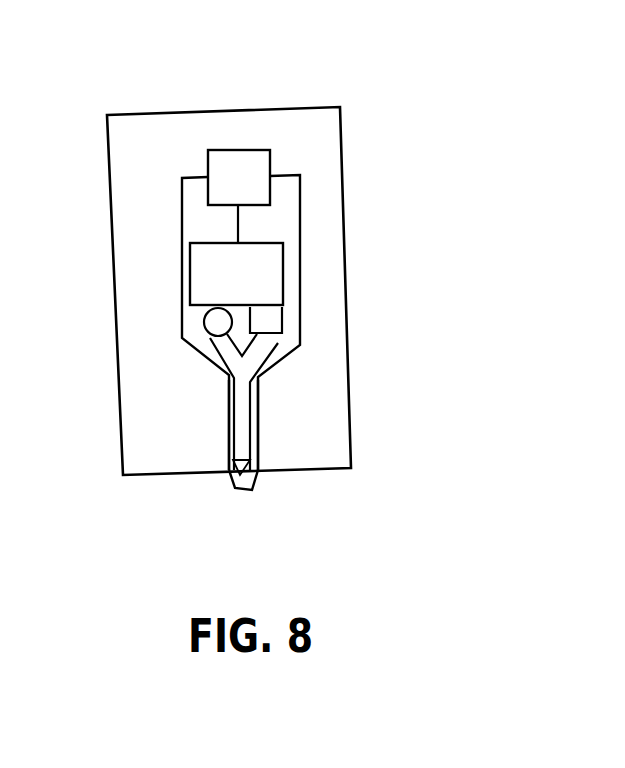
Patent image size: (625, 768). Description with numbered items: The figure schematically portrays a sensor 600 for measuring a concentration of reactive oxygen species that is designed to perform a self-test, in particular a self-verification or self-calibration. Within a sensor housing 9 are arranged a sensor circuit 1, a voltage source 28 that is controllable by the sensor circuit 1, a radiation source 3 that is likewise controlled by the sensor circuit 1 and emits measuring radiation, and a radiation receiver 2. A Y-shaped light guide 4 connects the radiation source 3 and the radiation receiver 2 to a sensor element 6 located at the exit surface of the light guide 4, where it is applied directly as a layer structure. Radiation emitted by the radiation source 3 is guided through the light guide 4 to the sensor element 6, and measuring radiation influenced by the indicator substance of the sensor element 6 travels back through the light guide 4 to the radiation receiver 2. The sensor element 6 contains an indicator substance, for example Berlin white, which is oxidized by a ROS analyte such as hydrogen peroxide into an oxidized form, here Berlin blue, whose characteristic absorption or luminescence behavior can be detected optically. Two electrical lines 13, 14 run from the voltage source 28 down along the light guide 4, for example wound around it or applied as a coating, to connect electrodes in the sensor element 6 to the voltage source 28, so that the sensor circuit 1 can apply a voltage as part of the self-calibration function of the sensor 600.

The sensor 600 is at (345, 90).
The sensor housing 9 is at (344, 155).
The voltage source 28 is at (239, 177).
The sensor circuit 1 is at (236, 274).
The radiation source 3 is at (218, 322).
The radiation receiver 2 is at (266, 321).
The Y-shaped light guide 4 is at (258, 392).
The electrical line 13 is at (228, 430).
The electrical line 14 is at (258, 430).
The sensor element 6 is at (255, 490).